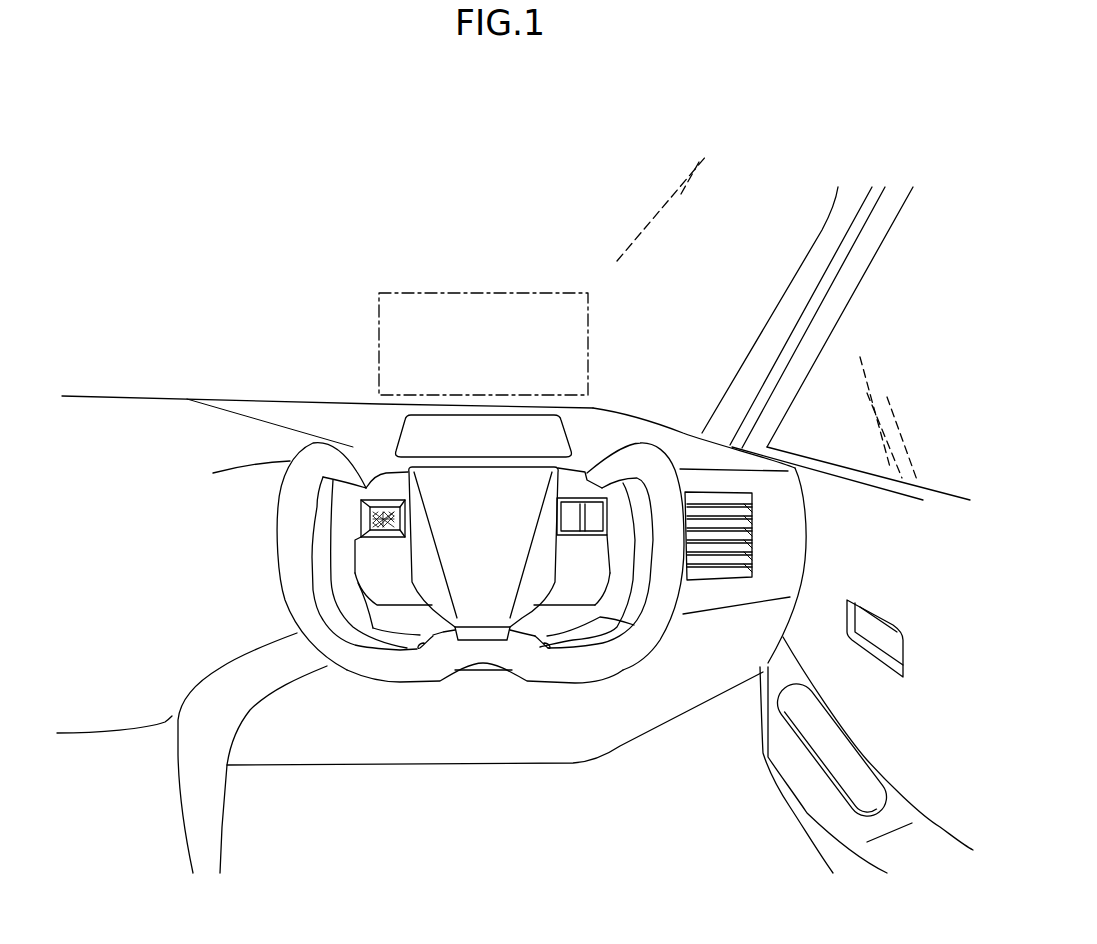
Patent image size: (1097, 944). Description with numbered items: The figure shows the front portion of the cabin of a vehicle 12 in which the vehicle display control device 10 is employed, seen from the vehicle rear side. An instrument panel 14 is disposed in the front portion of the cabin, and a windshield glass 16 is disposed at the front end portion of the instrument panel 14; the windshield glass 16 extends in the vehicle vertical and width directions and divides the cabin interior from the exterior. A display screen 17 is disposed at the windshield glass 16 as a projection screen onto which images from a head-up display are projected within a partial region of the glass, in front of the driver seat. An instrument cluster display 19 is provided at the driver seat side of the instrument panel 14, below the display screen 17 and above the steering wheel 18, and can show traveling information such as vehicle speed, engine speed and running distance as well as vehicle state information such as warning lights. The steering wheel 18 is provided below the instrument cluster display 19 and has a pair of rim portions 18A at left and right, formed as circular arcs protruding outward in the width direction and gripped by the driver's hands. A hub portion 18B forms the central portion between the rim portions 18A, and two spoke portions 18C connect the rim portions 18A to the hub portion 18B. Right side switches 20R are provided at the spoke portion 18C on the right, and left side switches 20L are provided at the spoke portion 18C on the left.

The vehicle display control device 10 is at (431, 479).
The vehicle 12 is at (509, 535).
The instrument panel 14 is at (224, 398).
The windshield glass 16 is at (753, 247).
The display screen 17 is at (448, 291).
The steering wheel 18 is at (470, 541).
The rim portions 18A is at (287, 612).
The hub portion 18B is at (479, 595).
The spoke portions 18C is at (337, 627).
The instrument cluster display 19 is at (567, 437).
The left side switches 20L is at (347, 547).
The right side switches 20R is at (640, 555).